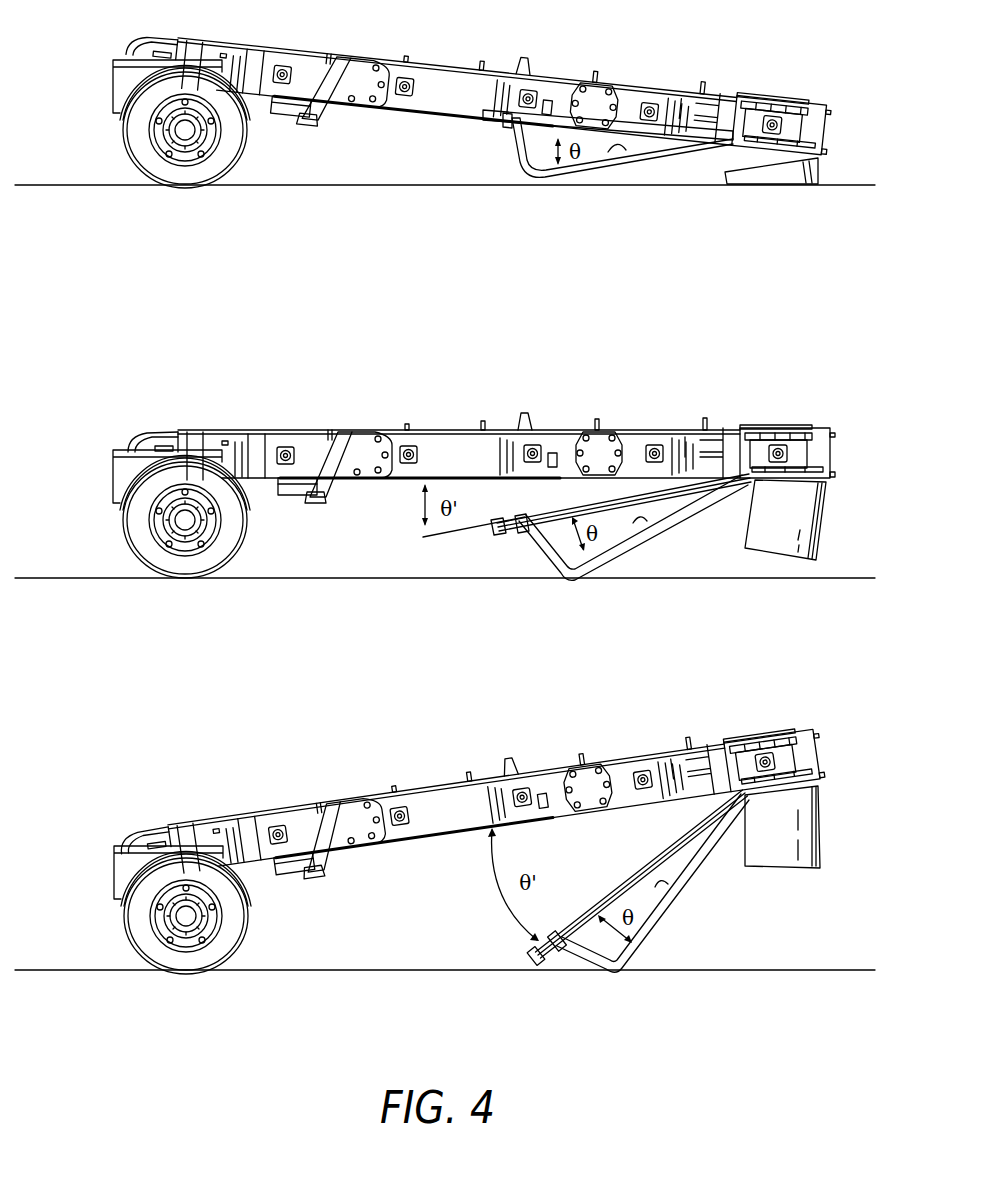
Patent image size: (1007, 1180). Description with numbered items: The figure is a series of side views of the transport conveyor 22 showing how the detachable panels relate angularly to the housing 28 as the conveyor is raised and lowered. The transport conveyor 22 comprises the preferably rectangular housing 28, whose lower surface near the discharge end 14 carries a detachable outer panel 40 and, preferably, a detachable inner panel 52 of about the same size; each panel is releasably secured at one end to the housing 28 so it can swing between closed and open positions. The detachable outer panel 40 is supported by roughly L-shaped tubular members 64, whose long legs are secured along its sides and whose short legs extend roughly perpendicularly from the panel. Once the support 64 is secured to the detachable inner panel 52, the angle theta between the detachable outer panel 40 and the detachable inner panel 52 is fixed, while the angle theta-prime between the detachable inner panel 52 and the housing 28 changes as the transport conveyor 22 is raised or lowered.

The discharge end 14 is at (843, 80).
The transport conveyor 22 is at (424, 100).
The housing 28 is at (815, 127).
The detachable outer panel 40 is at (619, 147).
The detachable inner panel 52 is at (588, 133).
The L-shaped tubular member 64 is at (522, 152).